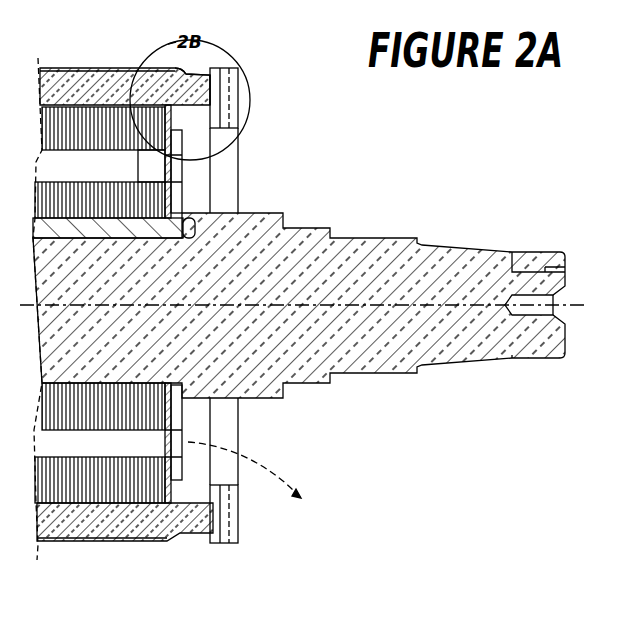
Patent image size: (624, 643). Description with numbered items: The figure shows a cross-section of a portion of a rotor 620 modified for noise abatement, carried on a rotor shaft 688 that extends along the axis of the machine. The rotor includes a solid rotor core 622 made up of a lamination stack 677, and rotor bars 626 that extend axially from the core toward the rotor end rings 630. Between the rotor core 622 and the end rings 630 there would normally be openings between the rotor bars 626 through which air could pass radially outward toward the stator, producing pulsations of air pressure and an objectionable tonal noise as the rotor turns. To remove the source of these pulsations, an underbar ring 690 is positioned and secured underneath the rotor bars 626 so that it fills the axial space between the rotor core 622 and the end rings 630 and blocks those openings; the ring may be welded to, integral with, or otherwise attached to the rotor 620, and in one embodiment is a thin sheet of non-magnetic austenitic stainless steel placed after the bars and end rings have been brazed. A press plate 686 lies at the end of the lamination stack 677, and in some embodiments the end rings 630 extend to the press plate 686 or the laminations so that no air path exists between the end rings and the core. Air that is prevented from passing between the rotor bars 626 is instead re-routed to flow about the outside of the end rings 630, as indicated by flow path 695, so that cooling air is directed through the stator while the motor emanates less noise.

The rotor 620 is at (140, 565).
The rotor core 622 is at (98, 67).
The rotor bars 626 is at (204, 70).
The end rings 630 is at (230, 68).
The lamination stack 677 is at (156, 103).
The press plate 686 is at (182, 134).
The rotor shaft 688 is at (368, 238).
The underbar ring 690 is at (213, 131).
The flow path 695 is at (258, 470).